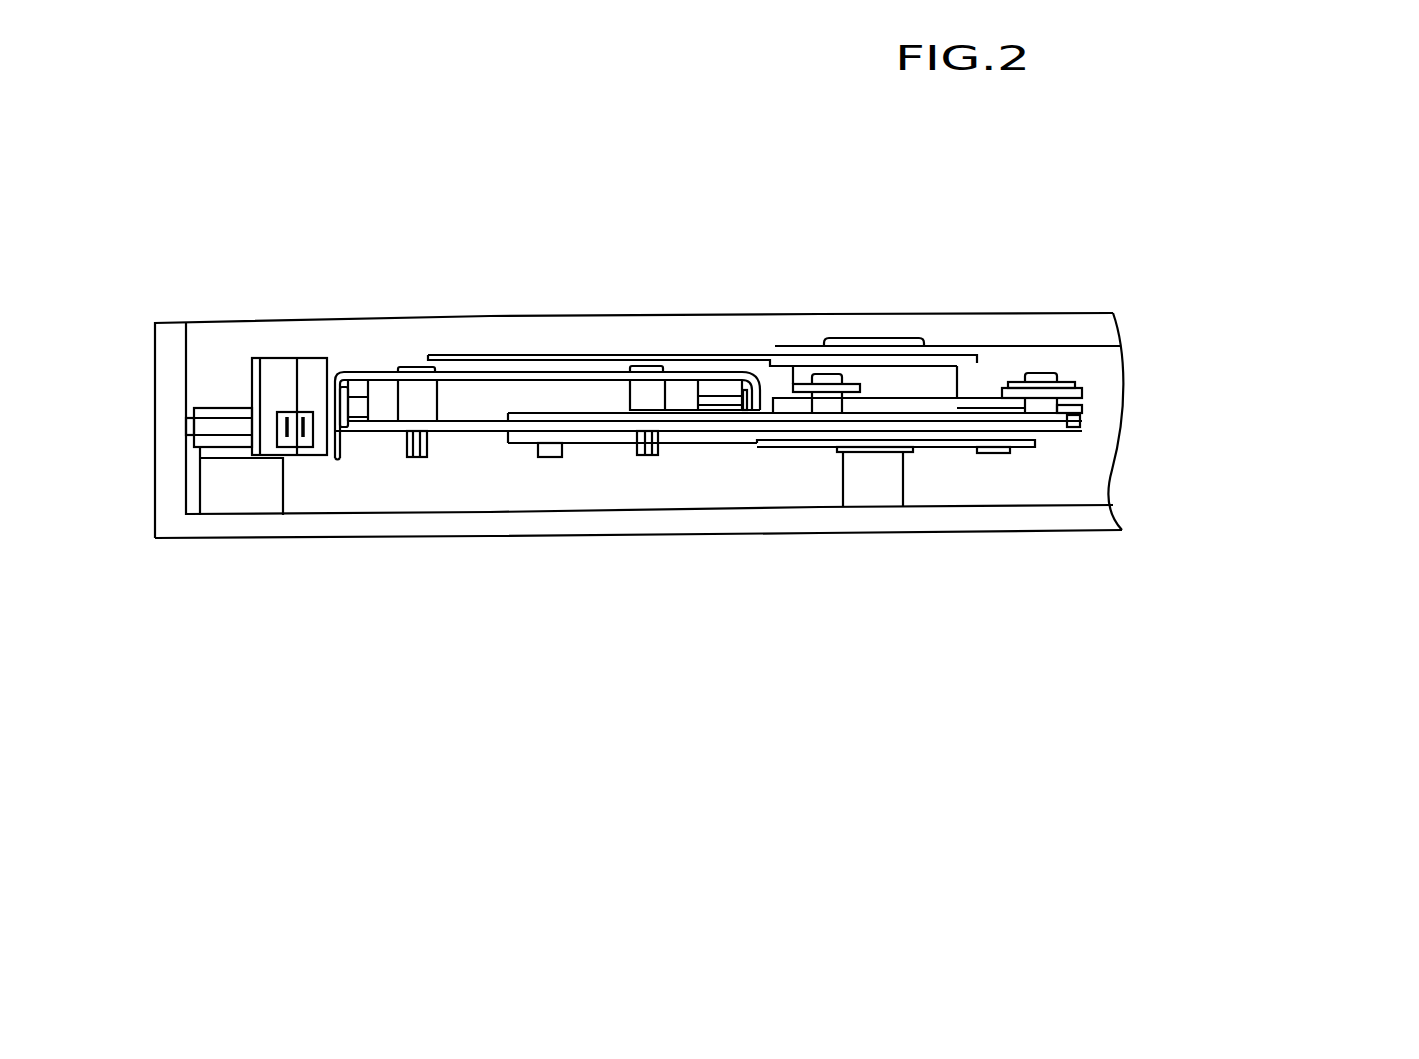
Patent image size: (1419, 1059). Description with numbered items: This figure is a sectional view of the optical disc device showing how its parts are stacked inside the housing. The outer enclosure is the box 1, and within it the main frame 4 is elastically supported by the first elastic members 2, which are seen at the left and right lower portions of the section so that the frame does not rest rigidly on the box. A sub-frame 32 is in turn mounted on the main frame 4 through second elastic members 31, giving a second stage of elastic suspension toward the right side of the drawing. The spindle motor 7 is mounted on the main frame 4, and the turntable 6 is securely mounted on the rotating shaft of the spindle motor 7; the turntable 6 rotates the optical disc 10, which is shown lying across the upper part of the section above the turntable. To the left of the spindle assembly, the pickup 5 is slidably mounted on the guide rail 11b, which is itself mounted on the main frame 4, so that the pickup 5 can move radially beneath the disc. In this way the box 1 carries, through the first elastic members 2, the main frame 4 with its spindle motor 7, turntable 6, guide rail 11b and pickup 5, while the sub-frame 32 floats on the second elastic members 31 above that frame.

The box 1 is at (180, 533).
The first elastic members 2 is at (227, 450).
The main frame 4 is at (475, 427).
The pickup 5 is at (727, 405).
The turntable 6 is at (769, 366).
The spindle motor 7 is at (925, 387).
The optical disc 10 is at (1000, 345).
The guide rail 11b is at (360, 408).
The second elastic members 31 is at (1068, 413).
The sub-frame 32 is at (1012, 402).